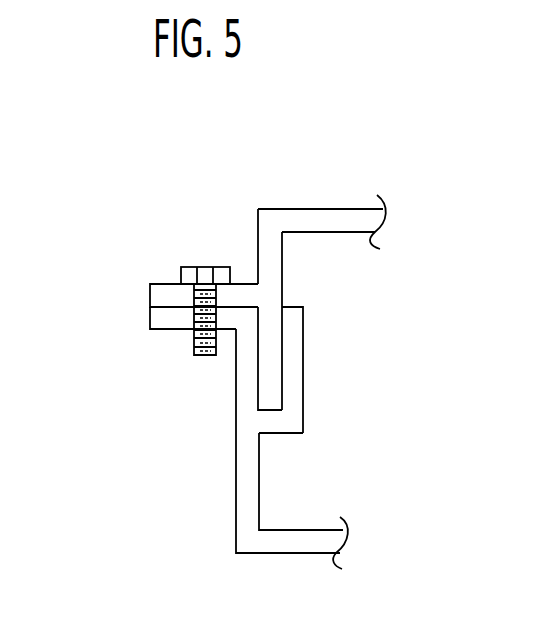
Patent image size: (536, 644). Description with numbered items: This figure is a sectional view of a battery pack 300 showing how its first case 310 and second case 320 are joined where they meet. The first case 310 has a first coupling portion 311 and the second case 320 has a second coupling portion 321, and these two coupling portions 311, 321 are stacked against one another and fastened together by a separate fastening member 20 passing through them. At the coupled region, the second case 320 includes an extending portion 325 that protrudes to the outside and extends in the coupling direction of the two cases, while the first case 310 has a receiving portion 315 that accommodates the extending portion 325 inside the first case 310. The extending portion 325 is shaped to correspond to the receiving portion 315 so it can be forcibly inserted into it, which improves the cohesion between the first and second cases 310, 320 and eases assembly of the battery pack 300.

The battery pack 300 is at (384, 115).
The second case 320 is at (277, 193).
The extending portion 325 is at (270, 358).
The second coupling portion 321 is at (165, 298).
The first case 310 is at (255, 568).
The receiving portion 315 is at (272, 408).
The first coupling portion 311 is at (165, 318).
The fastening member 20 is at (202, 263).